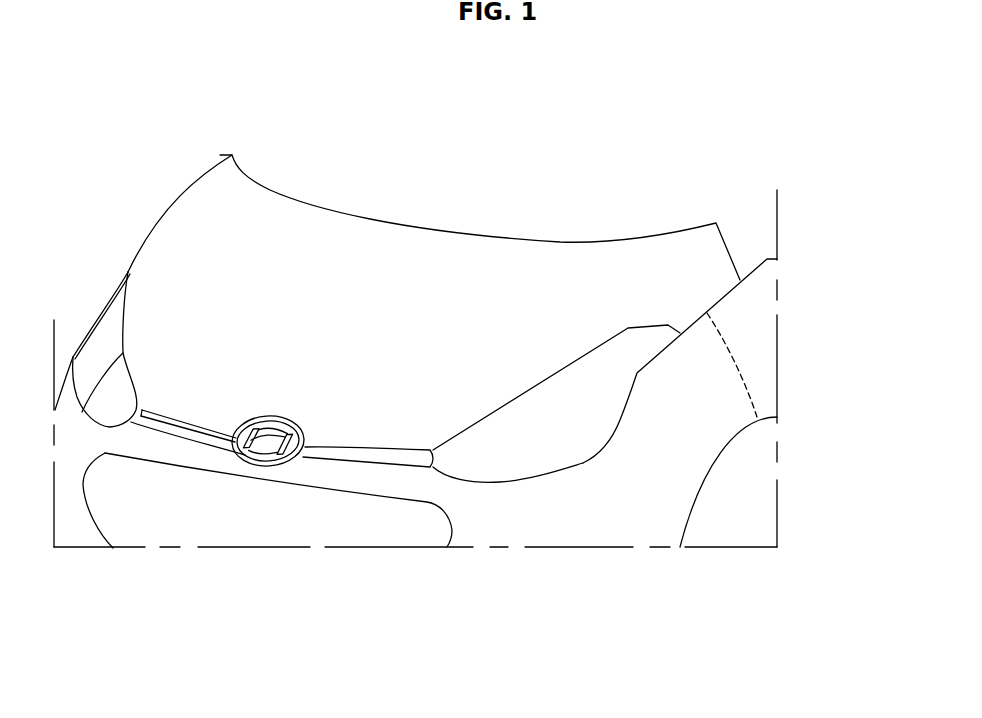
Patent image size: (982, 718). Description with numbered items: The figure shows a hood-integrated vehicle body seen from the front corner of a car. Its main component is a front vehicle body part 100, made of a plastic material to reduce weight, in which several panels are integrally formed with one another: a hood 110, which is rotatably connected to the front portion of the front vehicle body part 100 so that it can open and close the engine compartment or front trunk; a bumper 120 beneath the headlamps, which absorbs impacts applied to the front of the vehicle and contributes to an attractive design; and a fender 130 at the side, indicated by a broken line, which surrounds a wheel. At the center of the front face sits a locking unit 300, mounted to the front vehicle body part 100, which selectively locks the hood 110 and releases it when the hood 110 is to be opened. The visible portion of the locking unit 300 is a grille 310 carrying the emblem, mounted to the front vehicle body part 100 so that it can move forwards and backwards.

The front vehicle body part 100 is at (160, 210).
The hood 110 is at (383, 282).
The bumper 120 is at (158, 513).
The fender 130 is at (750, 350).
The locking unit 300 is at (258, 470).
The grille 310 is at (303, 456).